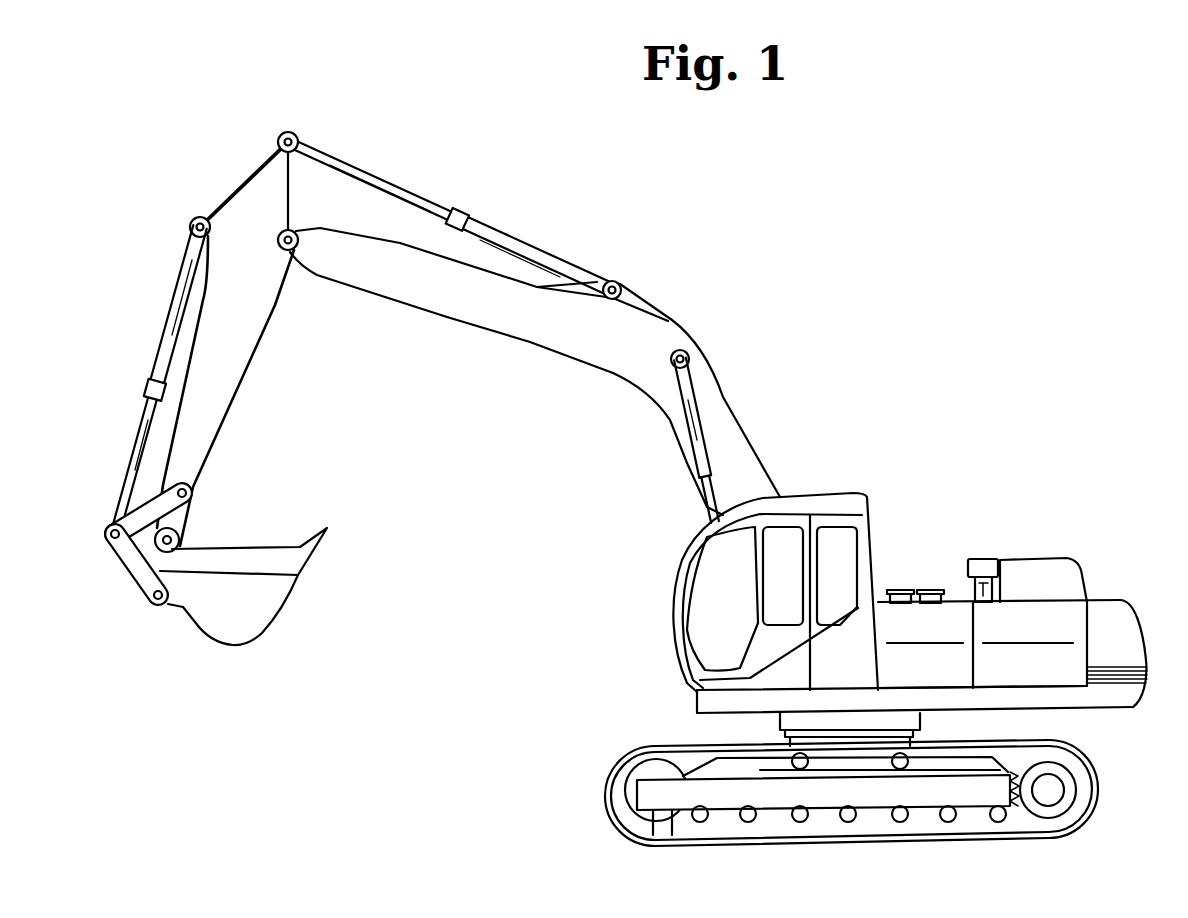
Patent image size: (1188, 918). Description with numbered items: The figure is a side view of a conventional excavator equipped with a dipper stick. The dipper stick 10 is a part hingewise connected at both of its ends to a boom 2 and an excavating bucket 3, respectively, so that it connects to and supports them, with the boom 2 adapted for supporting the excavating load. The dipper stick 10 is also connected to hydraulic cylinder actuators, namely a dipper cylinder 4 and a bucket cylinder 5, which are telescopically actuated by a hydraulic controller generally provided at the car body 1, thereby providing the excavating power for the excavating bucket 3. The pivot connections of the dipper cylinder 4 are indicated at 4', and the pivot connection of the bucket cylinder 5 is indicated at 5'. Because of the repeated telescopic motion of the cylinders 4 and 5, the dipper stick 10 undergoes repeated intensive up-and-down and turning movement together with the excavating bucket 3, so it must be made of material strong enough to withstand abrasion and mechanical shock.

The car body 1 is at (966, 552).
The boom 2 is at (528, 337).
The excavating bucket 3 is at (243, 560).
The dipper cylinder 4 is at (453, 218).
The arm cylinder pivot pins 4' is at (232, 155).
The bucket cylinder 5 is at (157, 380).
The bucket cylinder pivot pin 5' is at (108, 505).
The dipper stick 10 is at (238, 375).